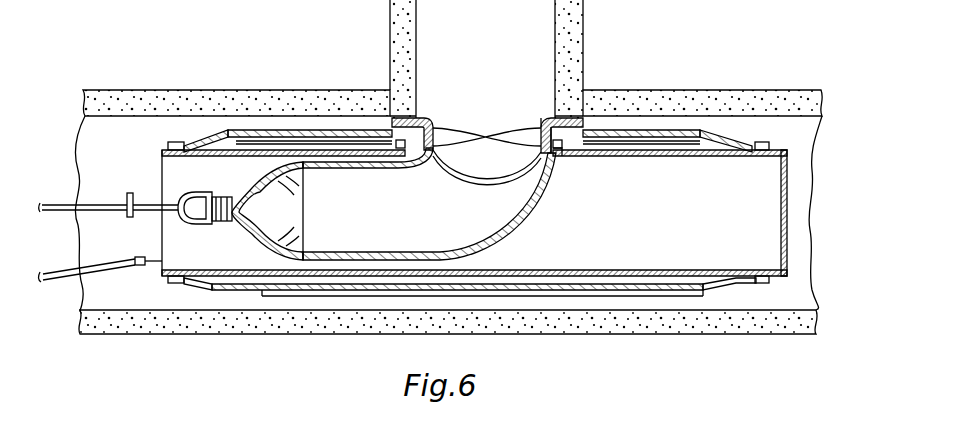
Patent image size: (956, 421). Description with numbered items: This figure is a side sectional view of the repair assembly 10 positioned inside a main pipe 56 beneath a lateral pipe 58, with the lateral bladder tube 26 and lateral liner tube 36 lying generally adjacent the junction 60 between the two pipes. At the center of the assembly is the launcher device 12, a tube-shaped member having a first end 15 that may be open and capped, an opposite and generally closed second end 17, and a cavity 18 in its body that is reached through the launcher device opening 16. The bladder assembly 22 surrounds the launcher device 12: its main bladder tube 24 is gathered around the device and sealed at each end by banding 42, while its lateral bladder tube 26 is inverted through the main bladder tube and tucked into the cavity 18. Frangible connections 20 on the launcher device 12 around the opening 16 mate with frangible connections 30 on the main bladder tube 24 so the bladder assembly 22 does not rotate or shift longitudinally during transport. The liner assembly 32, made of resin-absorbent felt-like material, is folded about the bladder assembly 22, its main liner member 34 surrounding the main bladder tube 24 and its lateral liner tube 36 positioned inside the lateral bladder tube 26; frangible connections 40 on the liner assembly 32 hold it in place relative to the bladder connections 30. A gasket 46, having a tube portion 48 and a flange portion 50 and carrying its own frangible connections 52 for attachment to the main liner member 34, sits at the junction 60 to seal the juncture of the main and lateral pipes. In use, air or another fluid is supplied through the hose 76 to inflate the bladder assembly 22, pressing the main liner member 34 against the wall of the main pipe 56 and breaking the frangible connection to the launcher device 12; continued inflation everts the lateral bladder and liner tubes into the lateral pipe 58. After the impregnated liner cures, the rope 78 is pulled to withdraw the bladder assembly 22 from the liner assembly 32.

The repair assembly 10 is at (82, 145).
The launcher device 12 is at (793, 238).
The first end 15 is at (160, 235).
The launcher device opening 16 is at (560, 160).
The second end 17 is at (788, 182).
The cavity 18 is at (658, 227).
The frangible connections 20 is at (395, 148).
The bladder assembly 22 is at (755, 131).
The main bladder tube 24 is at (233, 130).
The lateral bladder tube 26 is at (528, 226).
The frangible connections 30 is at (447, 130).
The liner assembly 32 is at (686, 127).
The main liner member 34 is at (305, 130).
The lateral liner tube 36 is at (388, 160).
The frangible connections 40 is at (577, 114).
The banding 42 is at (177, 142).
The gasket 46 is at (531, 107).
The tube portion 48 is at (527, 160).
The flange portion 50 is at (553, 120).
The frangible connections 52 is at (388, 122).
The main pipe 56 is at (754, 92).
The lateral pipe 58 is at (584, 24).
The junction 60 is at (580, 95).
The hose 76 is at (100, 265).
The rope 78 is at (88, 206).